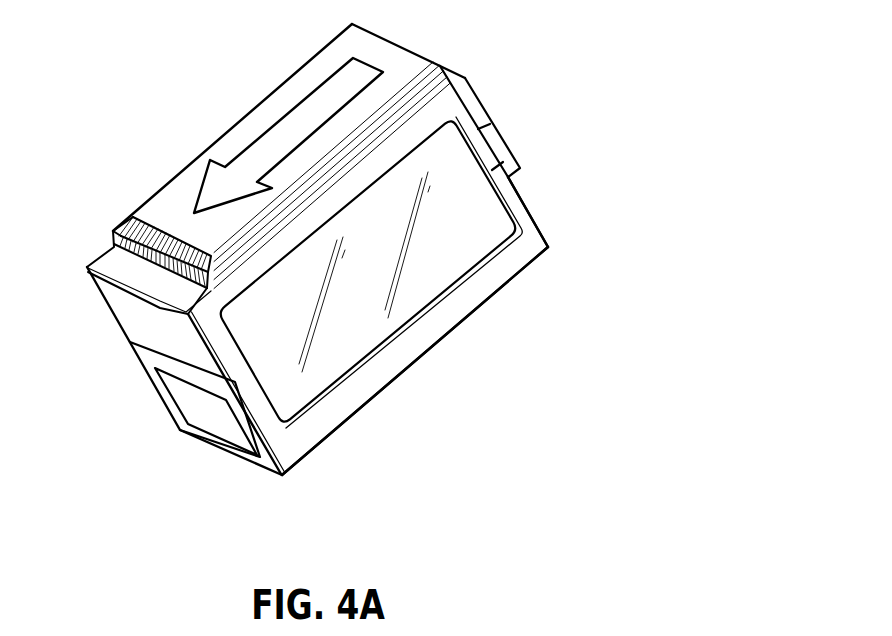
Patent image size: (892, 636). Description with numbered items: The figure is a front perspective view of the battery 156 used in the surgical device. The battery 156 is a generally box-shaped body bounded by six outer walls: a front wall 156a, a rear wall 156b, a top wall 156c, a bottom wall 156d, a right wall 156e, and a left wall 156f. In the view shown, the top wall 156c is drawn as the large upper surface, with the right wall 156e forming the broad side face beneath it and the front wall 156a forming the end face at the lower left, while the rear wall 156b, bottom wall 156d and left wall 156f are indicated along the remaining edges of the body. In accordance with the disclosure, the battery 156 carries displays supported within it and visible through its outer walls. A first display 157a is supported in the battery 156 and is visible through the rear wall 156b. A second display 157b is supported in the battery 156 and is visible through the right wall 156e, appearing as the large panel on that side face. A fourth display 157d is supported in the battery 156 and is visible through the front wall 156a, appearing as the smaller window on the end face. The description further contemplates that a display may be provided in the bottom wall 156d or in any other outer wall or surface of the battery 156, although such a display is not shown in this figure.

The battery 156 is at (190, 141).
The front wall 156a is at (146, 319).
The rear wall 156b is at (521, 196).
The top wall 156c is at (275, 100).
The bottom wall 156d is at (341, 427).
The right wall 156e is at (301, 437).
The left wall 156f is at (96, 290).
The first display 157a is at (478, 95).
The second display 157b is at (447, 272).
The fourth display 157d is at (198, 430).